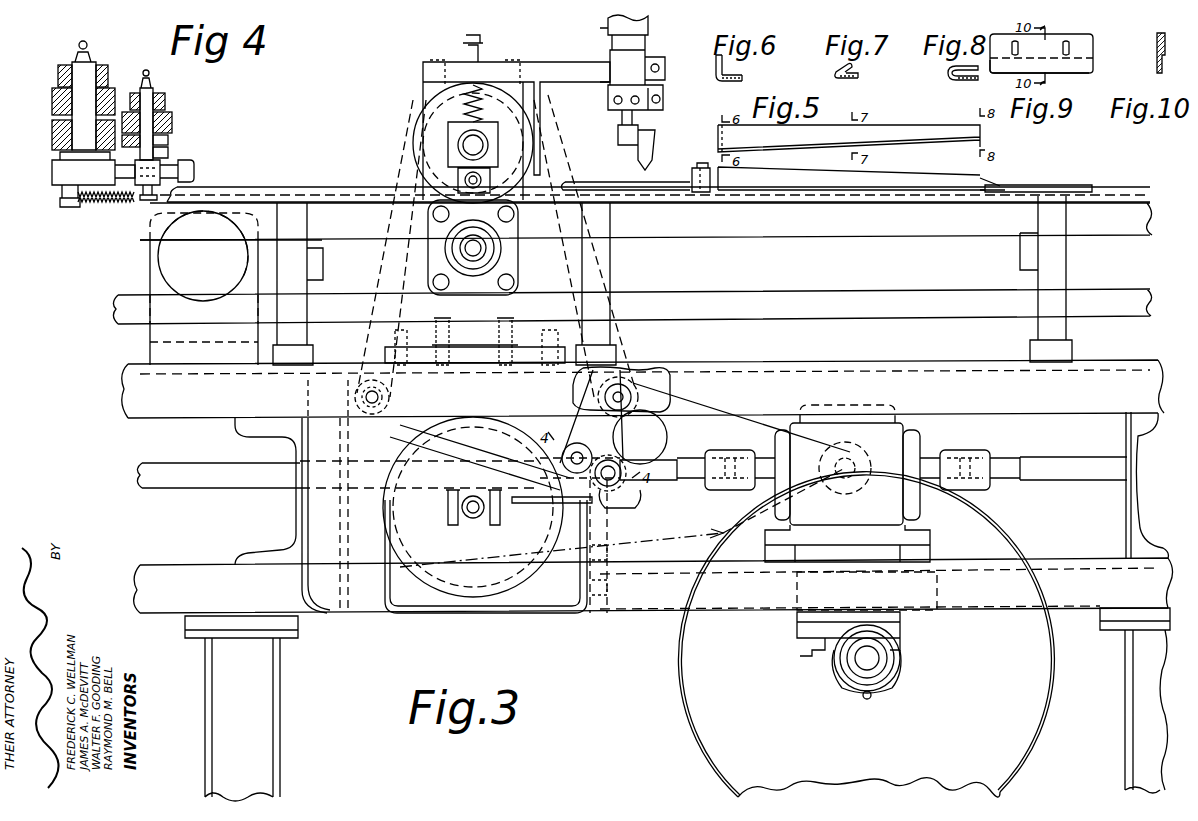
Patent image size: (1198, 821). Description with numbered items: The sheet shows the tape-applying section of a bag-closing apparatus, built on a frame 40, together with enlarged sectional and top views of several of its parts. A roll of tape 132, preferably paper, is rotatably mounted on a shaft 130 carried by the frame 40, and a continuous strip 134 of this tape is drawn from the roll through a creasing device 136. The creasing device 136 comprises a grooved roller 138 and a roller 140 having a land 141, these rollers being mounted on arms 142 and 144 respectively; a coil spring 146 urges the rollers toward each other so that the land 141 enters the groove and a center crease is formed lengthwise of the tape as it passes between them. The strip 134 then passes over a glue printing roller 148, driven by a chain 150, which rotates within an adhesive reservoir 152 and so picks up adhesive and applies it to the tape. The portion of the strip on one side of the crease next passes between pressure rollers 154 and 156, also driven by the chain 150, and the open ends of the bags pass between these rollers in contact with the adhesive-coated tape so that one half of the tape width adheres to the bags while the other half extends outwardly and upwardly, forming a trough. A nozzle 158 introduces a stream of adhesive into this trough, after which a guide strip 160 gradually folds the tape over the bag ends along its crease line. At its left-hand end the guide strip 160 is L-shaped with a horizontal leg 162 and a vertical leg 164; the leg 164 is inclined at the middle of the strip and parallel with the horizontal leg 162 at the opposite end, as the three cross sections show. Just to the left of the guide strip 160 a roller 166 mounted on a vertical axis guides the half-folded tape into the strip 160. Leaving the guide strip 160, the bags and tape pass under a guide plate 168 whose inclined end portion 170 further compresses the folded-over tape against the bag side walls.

In FIG. 3, the frame 40 is at (856, 222).
In FIG. 3, the shaft 130 is at (869, 659).
In FIG. 3, the roll of tape 132 is at (708, 742).
In FIG. 3, the continuous strip of tape 134 is at (393, 317).
In FIG. 3, the creasing device 136 is at (565, 413).
In FIG. 3, the grooved roller 138 is at (593, 447).
In FIG. 4, the grooved roller 138 is at (56, 140).
In FIG. 3, the roller 140 is at (602, 504).
In FIG. 4, the roller 140 is at (168, 133).
In FIG. 4, the land 141 is at (173, 117).
In FIG. 4, the arm 142 is at (56, 175).
In FIG. 4, the arm 144 is at (168, 157).
In FIG. 4, the coil spring 146 is at (102, 204).
In FIG. 3, the glue printing roller 148 is at (407, 470).
In FIG. 3, the chain 150 is at (641, 548).
In FIG. 3, the adhesive reservoir 152 is at (392, 597).
In FIG. 3, the pressure roller 154 is at (428, 146).
In FIG. 3, the pressure roller 156 is at (520, 272).
In FIG. 3, the nozzle 158 is at (645, 160).
In FIG. 3, the guide strip 160 is at (754, 177).
In FIG. 6, the guide strip 160 is at (716, 76).
In FIG. 6, the horizontal leg 162 is at (742, 79).
In FIG. 8, the horizontal leg 162 is at (962, 90).
In FIG. 6, the vertical leg 164 is at (716, 62).
In FIG. 7, the vertical leg 164 is at (852, 69).
In FIG. 8, the vertical leg 164 is at (950, 66).
In FIG. 3, the roller 166 is at (697, 178).
In FIG. 3, the guide plate 168 is at (1080, 188).
In FIG. 9, the guide plate 168 is at (1082, 42).
In FIG. 3, the inclined end portion 170 is at (1000, 188).
In FIG. 9, the inclined end portion 170 is at (997, 68).
In FIG. 10, the inclined end portion 170 is at (1157, 68).